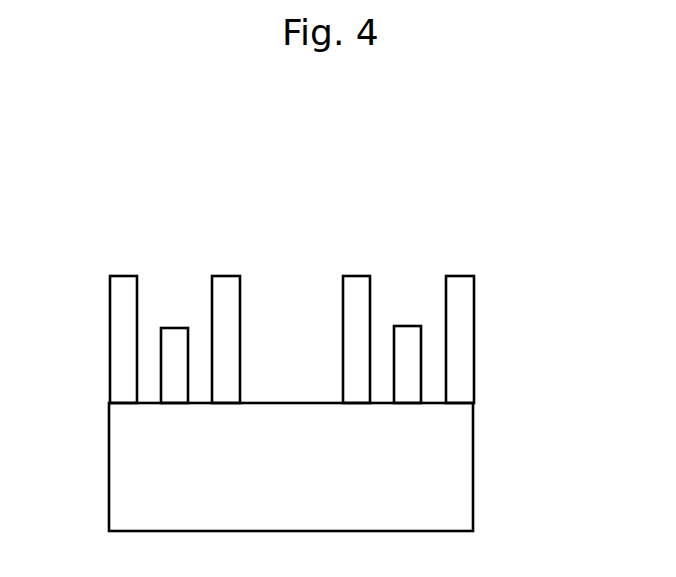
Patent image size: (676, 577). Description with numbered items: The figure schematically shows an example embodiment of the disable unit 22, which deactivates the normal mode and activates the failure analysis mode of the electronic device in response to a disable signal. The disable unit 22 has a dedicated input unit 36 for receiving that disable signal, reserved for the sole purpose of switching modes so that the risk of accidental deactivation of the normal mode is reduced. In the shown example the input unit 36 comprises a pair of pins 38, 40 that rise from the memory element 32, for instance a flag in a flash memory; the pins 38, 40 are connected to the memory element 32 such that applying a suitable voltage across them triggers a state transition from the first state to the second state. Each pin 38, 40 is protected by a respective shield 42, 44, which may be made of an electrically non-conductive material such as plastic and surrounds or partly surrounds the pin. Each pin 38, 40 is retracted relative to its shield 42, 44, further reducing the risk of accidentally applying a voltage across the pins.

The disable unit 22 is at (453, 162).
The memory element 32 is at (475, 457).
The input unit 36 is at (492, 332).
The pin 38 is at (175, 327).
The pin 40 is at (405, 335).
The shield 42 is at (113, 318).
The shield 44 is at (353, 298).